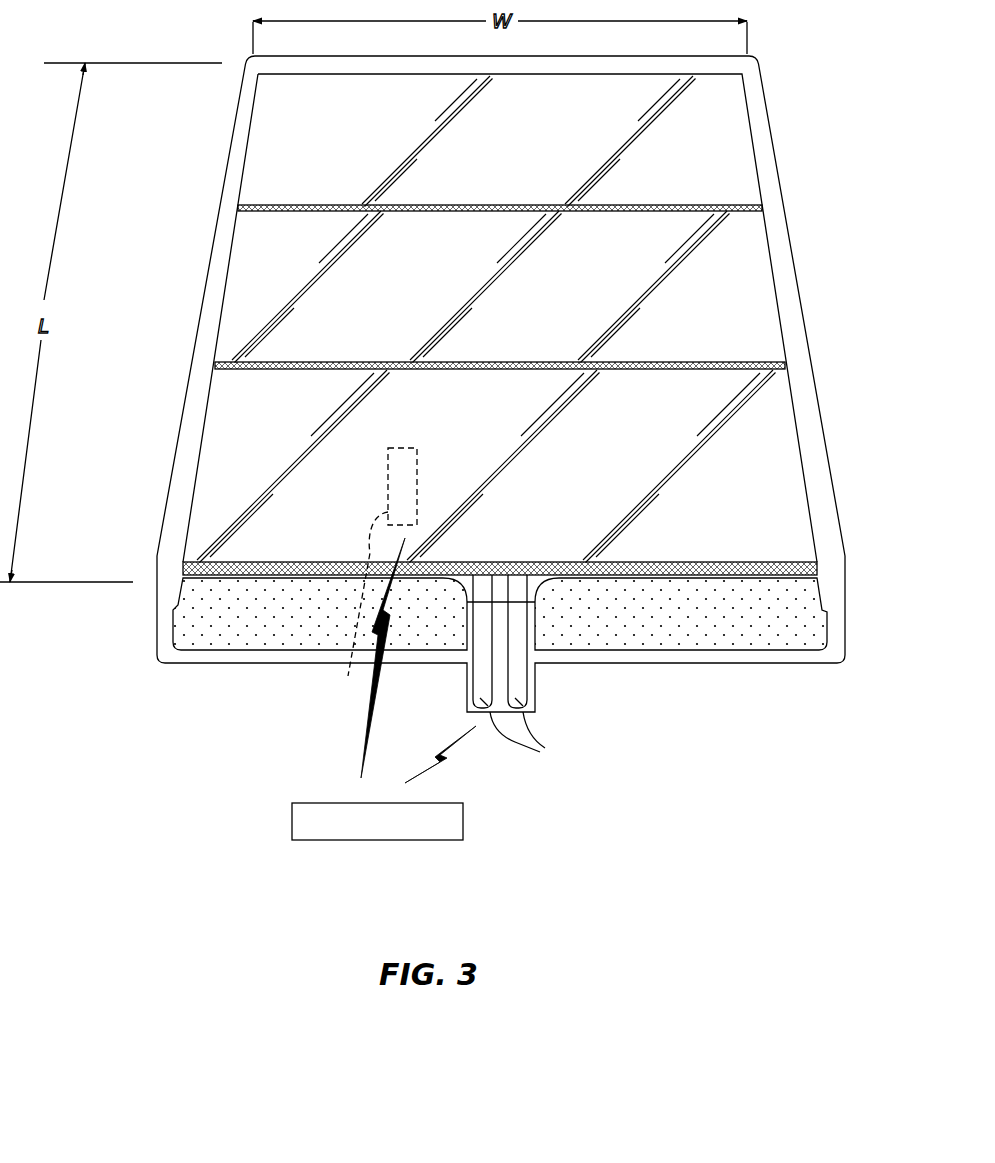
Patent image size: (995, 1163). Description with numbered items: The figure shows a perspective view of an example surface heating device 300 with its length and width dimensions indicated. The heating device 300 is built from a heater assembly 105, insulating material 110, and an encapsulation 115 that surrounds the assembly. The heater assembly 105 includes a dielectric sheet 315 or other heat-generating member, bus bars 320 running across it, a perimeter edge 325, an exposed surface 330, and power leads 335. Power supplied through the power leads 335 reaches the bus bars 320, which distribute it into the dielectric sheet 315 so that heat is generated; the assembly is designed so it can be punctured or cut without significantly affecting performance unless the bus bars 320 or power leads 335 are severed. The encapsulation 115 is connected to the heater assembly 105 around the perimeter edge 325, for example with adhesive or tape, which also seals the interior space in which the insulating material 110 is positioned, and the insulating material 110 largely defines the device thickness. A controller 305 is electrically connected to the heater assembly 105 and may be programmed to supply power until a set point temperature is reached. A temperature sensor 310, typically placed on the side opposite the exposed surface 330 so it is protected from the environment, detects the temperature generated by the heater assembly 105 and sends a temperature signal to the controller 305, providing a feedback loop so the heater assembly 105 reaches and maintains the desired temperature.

The heating device 300 is at (768, 50).
The heater assembly 105 is at (220, 313).
The insulating material 110 is at (214, 640).
The encapsulation 115 is at (789, 242).
The bus bars 320 is at (787, 362).
The perimeter edge 325 is at (799, 388).
The exposed surface 330 is at (513, 472).
The temperature sensor 310 is at (363, 645).
The dielectric sheet 315 is at (283, 578).
The power leads 335 is at (545, 750).
The controller 305 is at (393, 836).